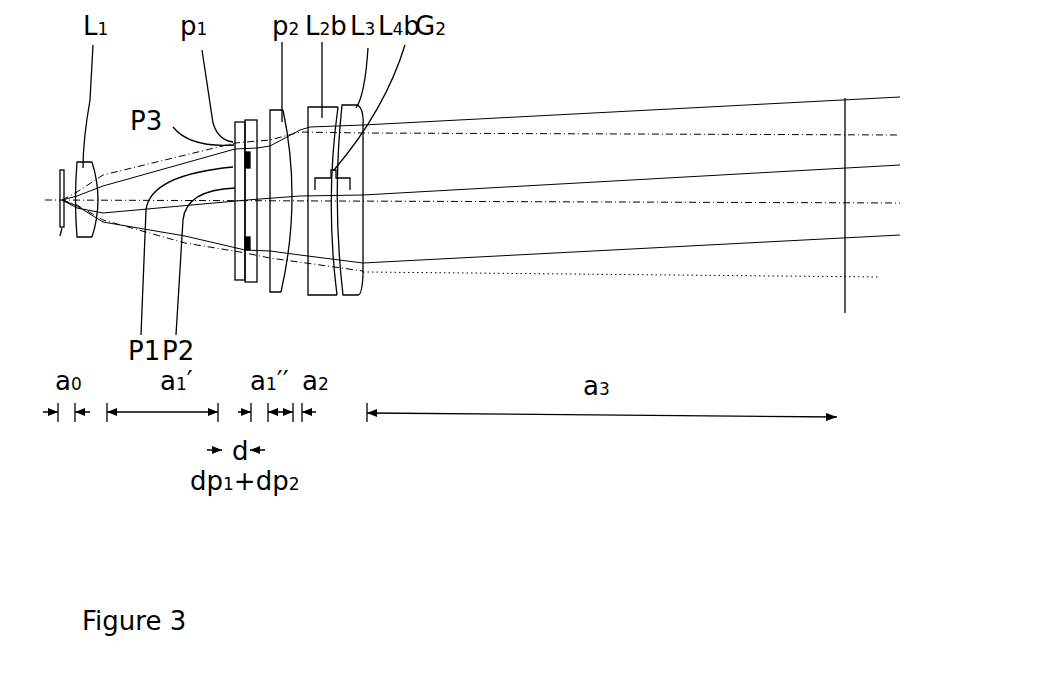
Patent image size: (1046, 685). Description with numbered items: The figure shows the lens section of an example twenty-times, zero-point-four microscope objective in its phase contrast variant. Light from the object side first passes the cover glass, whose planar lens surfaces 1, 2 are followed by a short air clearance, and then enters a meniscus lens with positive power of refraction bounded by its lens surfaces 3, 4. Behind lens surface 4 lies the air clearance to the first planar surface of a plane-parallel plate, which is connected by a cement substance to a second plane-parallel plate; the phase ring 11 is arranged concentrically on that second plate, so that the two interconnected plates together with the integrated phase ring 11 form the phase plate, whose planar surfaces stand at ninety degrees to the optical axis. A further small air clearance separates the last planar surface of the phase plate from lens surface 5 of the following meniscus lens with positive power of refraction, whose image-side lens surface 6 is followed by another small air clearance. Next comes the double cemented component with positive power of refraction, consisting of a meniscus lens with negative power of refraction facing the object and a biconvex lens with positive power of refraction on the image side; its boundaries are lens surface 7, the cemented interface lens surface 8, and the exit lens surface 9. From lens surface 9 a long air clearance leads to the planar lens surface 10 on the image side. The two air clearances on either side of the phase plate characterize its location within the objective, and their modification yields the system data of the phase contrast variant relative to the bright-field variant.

The lens surface 1 is at (60, 170).
The lens surface 2 is at (62, 228).
The lens surface 3 is at (77, 240).
The lens surface 4 is at (104, 185).
The lens surface 5 is at (268, 253).
The lens surface 6 is at (297, 265).
The lens surface 7 is at (307, 262).
The lens surface 8 is at (345, 295).
The lens surface 9 is at (365, 270).
The lens surface 10 is at (842, 125).
The phase ring 11 is at (245, 247).